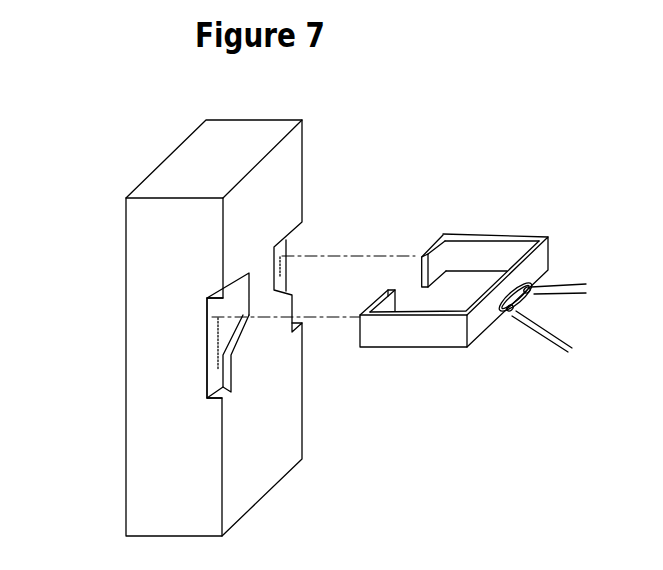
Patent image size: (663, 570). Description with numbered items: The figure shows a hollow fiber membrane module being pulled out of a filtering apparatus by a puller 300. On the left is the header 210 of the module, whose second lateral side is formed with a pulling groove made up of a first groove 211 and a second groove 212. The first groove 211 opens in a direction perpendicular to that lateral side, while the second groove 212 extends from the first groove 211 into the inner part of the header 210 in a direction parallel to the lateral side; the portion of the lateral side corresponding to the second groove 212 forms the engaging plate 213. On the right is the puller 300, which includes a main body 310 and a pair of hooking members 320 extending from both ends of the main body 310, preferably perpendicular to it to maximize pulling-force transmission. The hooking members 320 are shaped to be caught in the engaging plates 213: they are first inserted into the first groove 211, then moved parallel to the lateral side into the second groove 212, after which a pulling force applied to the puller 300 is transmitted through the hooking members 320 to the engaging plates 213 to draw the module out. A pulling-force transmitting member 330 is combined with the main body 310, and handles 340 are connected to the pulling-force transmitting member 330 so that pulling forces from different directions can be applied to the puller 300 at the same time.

The header 210 is at (338, 179).
The first groove 211 is at (204, 319).
The second groove 212 is at (204, 363).
The engaging plate 213 is at (206, 386).
The puller 300 is at (503, 209).
The main body 310 is at (527, 237).
The hooking member 320 is at (380, 292).
The pulling-force transmitting member 330 is at (507, 316).
The handle 340 is at (548, 337).